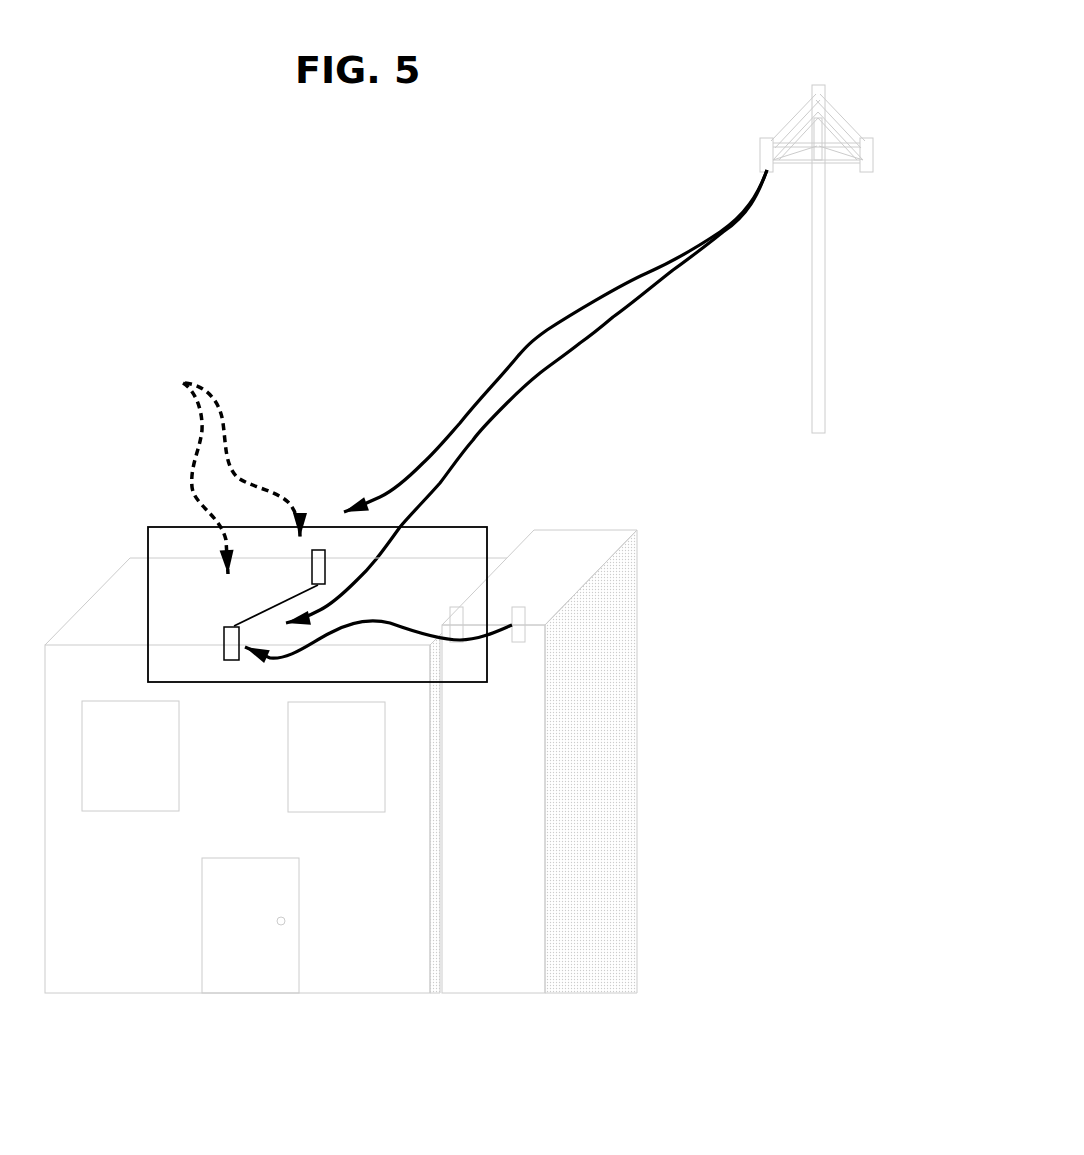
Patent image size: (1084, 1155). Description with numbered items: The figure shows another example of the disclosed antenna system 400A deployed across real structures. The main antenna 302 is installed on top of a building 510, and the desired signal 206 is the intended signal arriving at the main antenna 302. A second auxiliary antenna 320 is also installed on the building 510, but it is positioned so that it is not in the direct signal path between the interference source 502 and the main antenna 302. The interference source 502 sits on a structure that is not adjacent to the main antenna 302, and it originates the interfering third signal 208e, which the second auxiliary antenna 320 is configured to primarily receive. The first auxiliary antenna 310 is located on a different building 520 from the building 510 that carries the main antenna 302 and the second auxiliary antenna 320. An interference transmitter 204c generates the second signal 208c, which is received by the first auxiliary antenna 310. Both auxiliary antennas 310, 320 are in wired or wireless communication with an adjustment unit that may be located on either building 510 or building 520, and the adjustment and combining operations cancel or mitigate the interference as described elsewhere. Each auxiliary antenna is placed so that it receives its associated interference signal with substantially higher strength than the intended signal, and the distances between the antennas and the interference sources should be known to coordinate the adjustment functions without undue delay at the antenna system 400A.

The interference source 502 is at (810, 55).
The third signal 208e is at (518, 357).
The antenna system 400A is at (467, 527).
The second auxiliary antenna 320 is at (318, 550).
The desired signal 206 is at (222, 460).
The main antenna 302 is at (226, 641).
The first auxiliary antenna 310 is at (462, 625).
The interference transmitter 204c is at (526, 623).
The second signal 208c is at (552, 808).
The building 510 is at (281, 1022).
The building 520 is at (507, 1032).